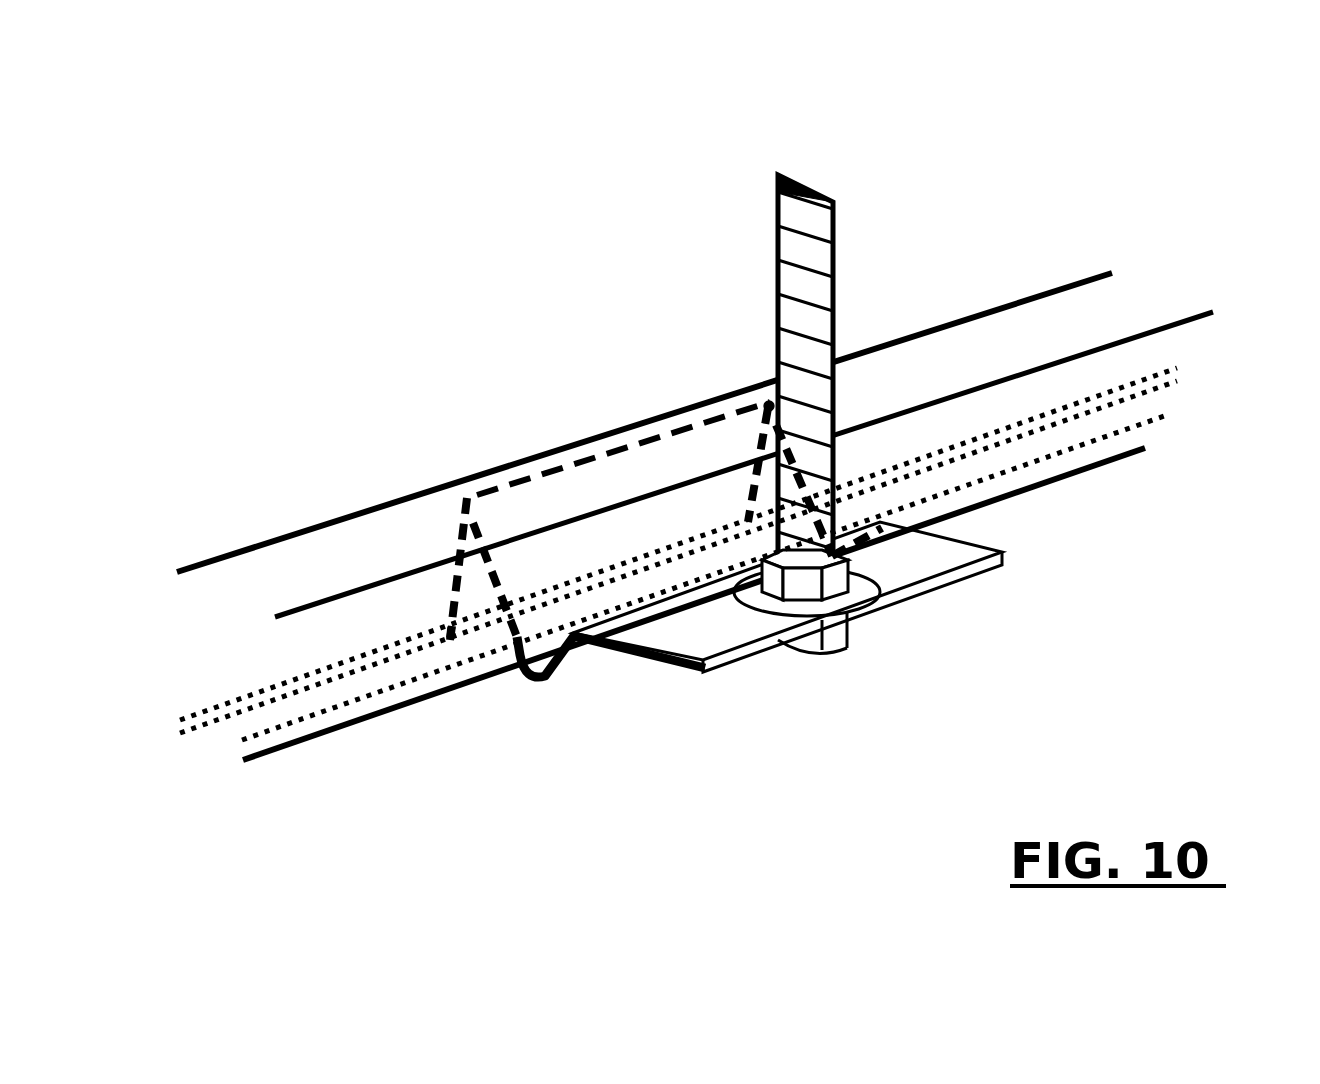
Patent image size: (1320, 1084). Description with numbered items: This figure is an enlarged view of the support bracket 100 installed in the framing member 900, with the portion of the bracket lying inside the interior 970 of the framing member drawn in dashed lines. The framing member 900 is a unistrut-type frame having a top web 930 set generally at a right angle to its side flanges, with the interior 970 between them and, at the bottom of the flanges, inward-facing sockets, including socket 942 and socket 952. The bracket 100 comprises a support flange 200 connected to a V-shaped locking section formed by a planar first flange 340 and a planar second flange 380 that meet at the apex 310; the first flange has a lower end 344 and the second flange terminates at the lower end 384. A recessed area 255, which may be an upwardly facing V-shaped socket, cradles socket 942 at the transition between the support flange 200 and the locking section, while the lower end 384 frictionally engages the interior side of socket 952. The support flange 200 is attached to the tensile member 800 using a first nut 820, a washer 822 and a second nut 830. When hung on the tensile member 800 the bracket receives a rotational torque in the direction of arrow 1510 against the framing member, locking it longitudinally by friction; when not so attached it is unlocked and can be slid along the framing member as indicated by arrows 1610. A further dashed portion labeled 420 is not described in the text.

The support bracket 100 is at (707, 716).
The support flange 200 is at (722, 648).
The recessed area 255 is at (674, 586).
The apex 310 is at (545, 472).
The first flange 340 is at (628, 547).
The lower end 344 is at (553, 678).
The second flange 380 is at (453, 543).
The lower end 384 is at (445, 640).
The bracket second leg 420 is at (463, 580).
The tensile member 800 is at (805, 280).
The first nut 820 is at (929, 575).
The washer 822 is at (890, 606).
The second nut 830 is at (868, 665).
The framing member 900 is at (1036, 322).
The top web 930 is at (953, 392).
The socket 942 is at (330, 731).
The socket 952 is at (242, 697).
The interior 970 is at (283, 662).
The arrow 1510 is at (1210, 216).
The arrows 1610 is at (605, 196).